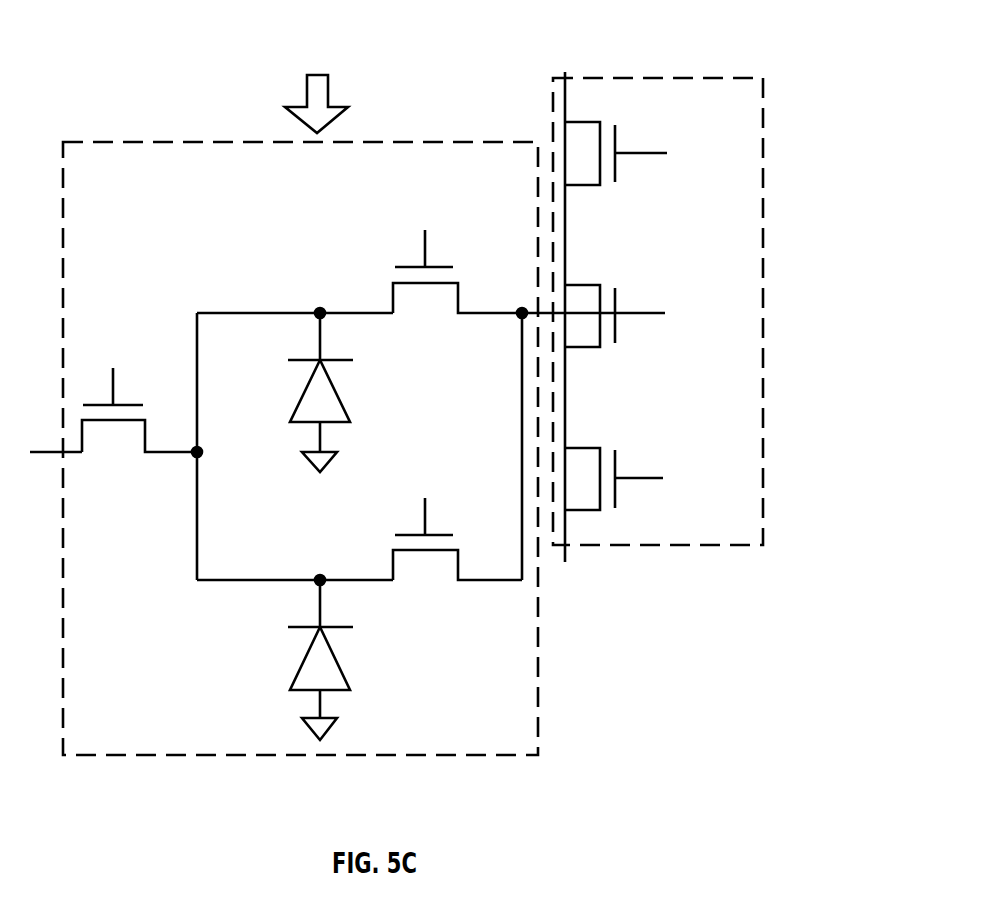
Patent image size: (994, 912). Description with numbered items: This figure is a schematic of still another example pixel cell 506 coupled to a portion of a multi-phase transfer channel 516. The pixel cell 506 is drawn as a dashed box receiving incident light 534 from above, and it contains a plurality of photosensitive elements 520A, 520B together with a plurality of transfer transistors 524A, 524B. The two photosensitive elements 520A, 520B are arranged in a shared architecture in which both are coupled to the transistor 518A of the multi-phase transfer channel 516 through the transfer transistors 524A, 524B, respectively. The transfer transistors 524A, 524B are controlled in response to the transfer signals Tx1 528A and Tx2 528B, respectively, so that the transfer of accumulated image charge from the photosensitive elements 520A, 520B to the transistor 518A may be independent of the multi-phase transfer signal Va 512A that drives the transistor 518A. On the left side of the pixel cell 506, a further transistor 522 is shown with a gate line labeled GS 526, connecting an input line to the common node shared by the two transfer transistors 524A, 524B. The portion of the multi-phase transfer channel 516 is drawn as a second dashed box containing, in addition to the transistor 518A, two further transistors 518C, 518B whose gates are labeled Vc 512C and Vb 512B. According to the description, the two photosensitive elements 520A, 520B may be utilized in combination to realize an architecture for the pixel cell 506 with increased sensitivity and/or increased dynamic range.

The pixel cell 506 is at (140, 142).
The light 534 is at (340, 78).
The multi-phase transfer channel 516 is at (757, 100).
The transistor 518C is at (633, 145).
The voltage supply Vc 512C is at (723, 155).
The transfer signal Tx1 528A is at (405, 206).
The global shutter signal GS 526 is at (117, 330).
The transistor 518A is at (632, 305).
The multi-phase transfer signal Va 512A is at (717, 315).
The transfer transistor 524A is at (425, 302).
The photosensitive element 520A is at (298, 372).
The transfer signal Tx2 528B is at (432, 455).
The transistor 518B is at (630, 468).
The voltage supply Vb 512B is at (700, 485).
The global shutter transistor 522 is at (105, 443).
The transfer transistor 524B is at (425, 575).
The photosensitive element 520B is at (350, 675).